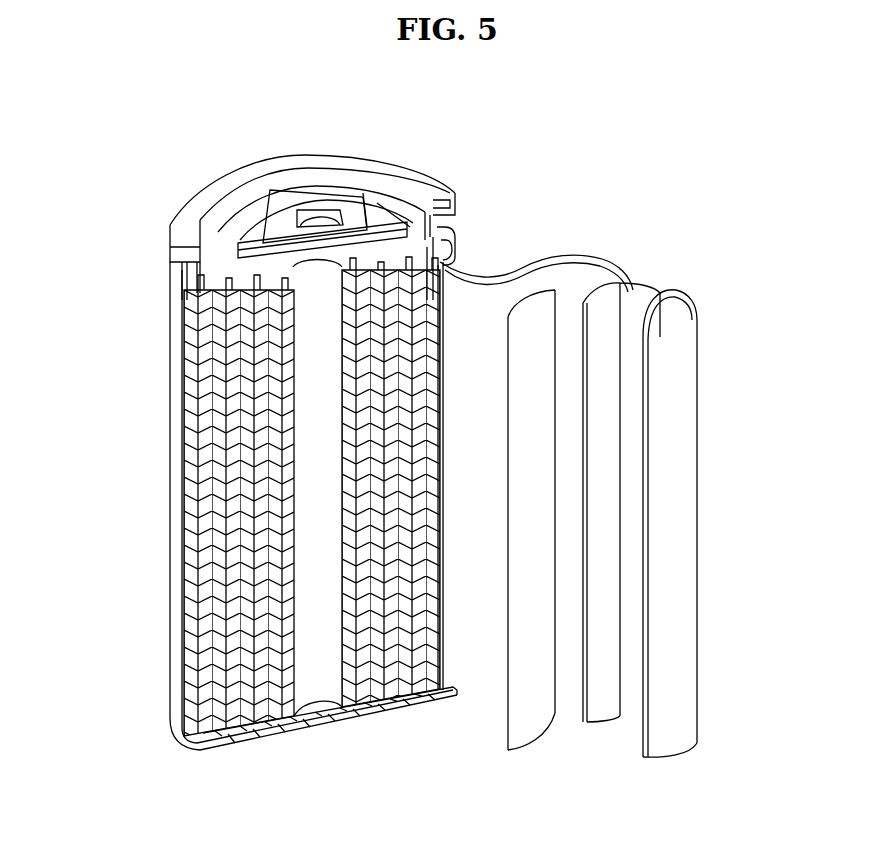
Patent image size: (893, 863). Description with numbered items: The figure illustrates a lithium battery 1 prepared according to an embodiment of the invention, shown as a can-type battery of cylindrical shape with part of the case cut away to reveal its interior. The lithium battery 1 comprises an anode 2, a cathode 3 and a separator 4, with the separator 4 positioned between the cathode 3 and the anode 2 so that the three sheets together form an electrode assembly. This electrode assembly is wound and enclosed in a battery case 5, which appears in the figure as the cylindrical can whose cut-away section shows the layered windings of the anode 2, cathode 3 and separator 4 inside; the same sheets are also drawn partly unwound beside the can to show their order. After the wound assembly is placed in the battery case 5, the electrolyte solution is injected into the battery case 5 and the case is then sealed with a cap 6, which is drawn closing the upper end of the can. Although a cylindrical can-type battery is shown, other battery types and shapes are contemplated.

The lithium battery 1 is at (668, 232).
The anode 2 is at (683, 400).
The cathode 3 is at (598, 312).
The separator 4 is at (653, 313).
The battery case 5 is at (172, 678).
The cap 6 is at (327, 187).